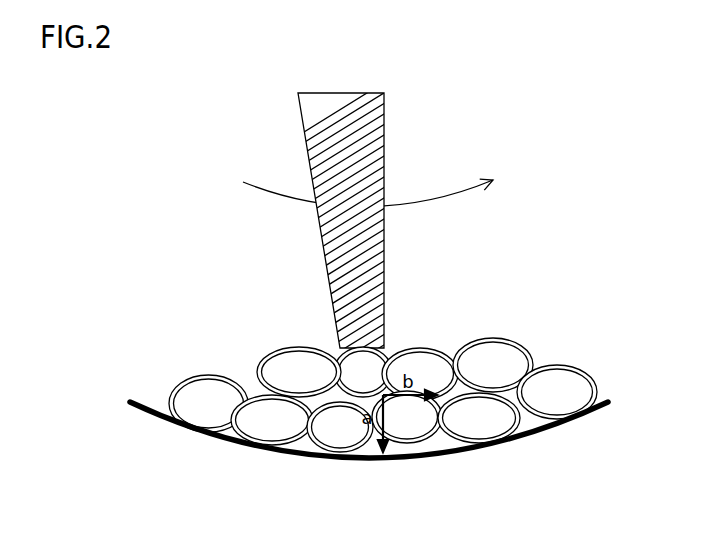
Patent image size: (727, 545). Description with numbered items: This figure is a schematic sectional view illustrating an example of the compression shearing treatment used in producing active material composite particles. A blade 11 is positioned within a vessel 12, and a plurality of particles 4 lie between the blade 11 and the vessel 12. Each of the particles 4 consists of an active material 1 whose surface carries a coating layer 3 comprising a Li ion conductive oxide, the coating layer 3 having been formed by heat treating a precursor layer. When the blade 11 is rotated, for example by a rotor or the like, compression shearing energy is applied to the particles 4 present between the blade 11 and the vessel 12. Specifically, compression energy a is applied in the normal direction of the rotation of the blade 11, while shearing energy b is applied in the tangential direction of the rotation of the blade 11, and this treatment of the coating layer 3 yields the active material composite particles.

The blade 11 is at (368, 120).
The vessel 12 is at (528, 438).
The particles 4 is at (424, 390).
The coating layer 3 is at (573, 368).
The active material 1 is at (563, 390).